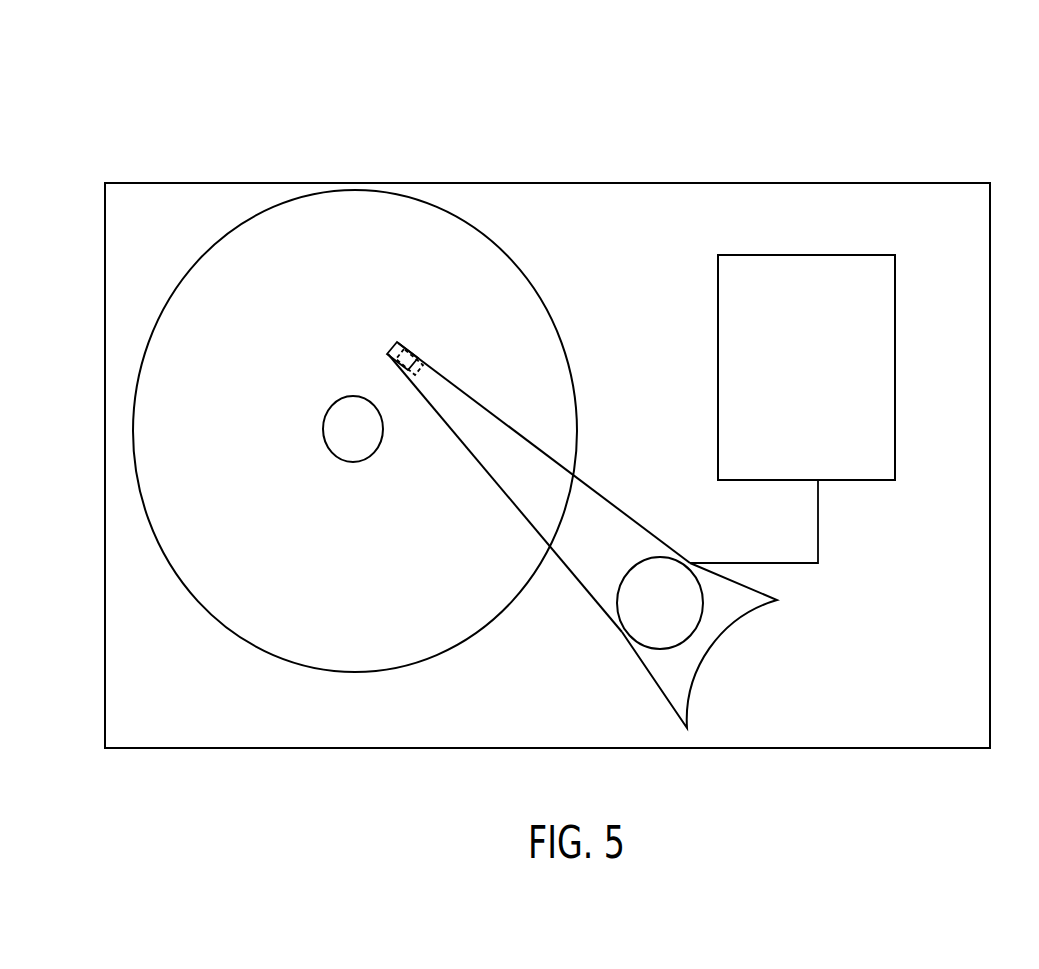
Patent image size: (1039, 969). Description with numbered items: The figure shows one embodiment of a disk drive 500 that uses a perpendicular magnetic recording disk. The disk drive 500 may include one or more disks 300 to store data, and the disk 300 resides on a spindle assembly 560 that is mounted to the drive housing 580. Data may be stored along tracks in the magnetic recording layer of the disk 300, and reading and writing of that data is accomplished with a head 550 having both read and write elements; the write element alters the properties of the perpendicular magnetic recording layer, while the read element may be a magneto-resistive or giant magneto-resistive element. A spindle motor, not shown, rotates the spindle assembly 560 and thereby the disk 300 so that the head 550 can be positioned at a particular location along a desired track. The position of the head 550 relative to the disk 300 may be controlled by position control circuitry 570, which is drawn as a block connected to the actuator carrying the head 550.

The disk drive 500 is at (962, 92).
The drive housing 580 is at (672, 180).
The disk 300 is at (243, 642).
The spindle assembly 560 is at (369, 441).
The position control circuitry 570 is at (814, 421).
The head 550 is at (412, 352).